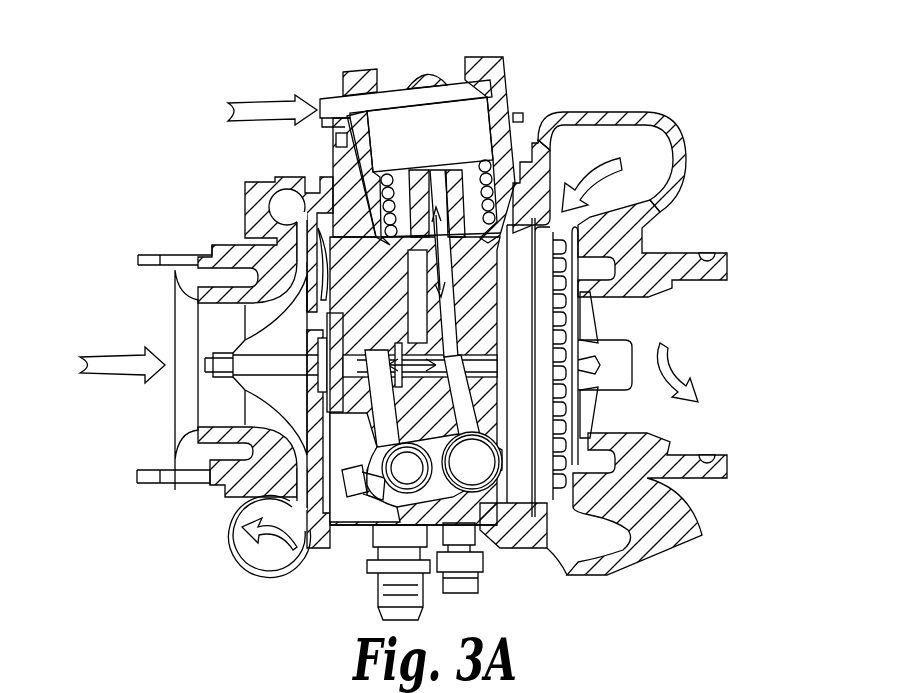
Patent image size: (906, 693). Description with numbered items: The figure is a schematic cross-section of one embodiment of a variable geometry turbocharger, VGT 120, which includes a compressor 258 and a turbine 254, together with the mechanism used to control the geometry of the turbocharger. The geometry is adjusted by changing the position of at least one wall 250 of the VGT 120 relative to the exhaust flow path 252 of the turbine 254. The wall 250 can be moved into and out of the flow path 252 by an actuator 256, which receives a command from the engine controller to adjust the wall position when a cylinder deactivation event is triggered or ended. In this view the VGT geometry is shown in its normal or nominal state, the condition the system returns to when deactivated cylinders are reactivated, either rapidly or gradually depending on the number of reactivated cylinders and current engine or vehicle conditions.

The VGT 120 is at (142, 142).
The wall 250 is at (547, 330).
The exhaust flow path 252 is at (573, 230).
The turbine 254 is at (658, 119).
The actuator 256 is at (505, 79).
The compressor 258 is at (243, 179).